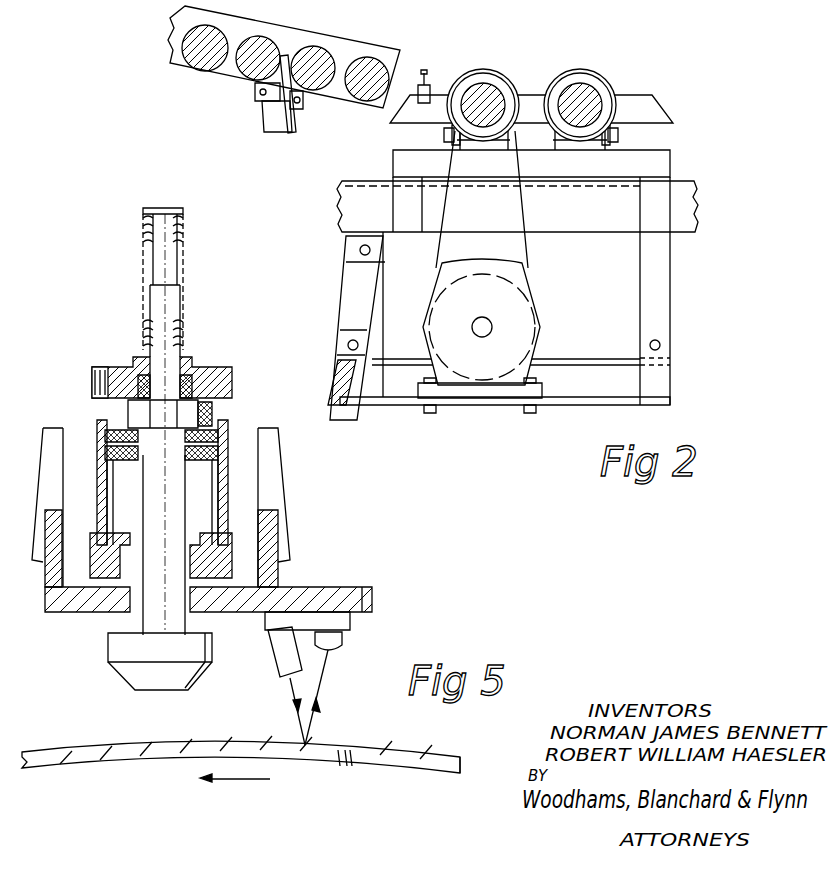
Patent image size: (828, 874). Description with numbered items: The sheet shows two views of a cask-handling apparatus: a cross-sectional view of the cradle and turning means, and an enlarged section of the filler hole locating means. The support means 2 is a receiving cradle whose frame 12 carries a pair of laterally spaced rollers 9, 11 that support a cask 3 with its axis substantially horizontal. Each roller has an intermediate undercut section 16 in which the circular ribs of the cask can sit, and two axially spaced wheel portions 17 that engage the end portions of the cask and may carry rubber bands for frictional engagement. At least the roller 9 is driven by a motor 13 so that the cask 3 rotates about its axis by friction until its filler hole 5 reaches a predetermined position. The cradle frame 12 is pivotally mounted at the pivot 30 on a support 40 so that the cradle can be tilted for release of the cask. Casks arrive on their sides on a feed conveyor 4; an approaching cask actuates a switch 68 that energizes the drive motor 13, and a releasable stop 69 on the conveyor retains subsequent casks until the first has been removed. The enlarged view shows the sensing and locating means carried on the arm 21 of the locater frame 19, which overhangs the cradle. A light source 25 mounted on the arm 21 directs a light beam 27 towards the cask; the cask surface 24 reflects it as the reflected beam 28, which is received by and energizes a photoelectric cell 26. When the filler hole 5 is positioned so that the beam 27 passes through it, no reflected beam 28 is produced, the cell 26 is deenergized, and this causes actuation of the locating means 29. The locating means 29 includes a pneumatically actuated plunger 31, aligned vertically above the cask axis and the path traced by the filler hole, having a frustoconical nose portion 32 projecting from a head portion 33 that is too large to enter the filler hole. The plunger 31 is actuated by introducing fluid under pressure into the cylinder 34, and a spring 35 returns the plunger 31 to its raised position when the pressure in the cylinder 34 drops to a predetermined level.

In FIG. 2, the support means 2 is at (642, 78).
In FIG. 5, the cask 3 is at (446, 762).
In FIG. 2, the feed conveyor 4 is at (195, 72).
In FIG. 5, the filler hole 5 is at (355, 760).
In FIG. 2, the roller 9 is at (489, 93).
In FIG. 2, the roller 11 is at (586, 93).
In FIG. 2, the frame 12 is at (655, 118).
In FIG. 2, the motor 13 is at (505, 329).
In FIG. 2, the undercut section 16 is at (491, 132).
In FIG. 2, the wheel portions 17 is at (463, 72).
In FIG. 5, the locater frame 19 is at (288, 550).
In FIG. 5, the arm 21 is at (272, 466).
In FIG. 5, the surface 24 is at (45, 758).
In FIG. 5, the light source 25 is at (285, 668).
In FIG. 5, the photoelectric cell 26 is at (344, 640).
In FIG. 5, the light beam 27 is at (293, 702).
In FIG. 5, the reflected beam 28 is at (324, 672).
In FIG. 5, the locating means 29 is at (84, 452).
In FIG. 2, the pivotal mounting 30 is at (442, 136).
In FIG. 5, the plunger 31 is at (143, 618).
In FIG. 5, the nose portion 32 is at (142, 672).
In FIG. 5, the head portion 33 is at (125, 656).
In FIG. 5, the cylinder 34 is at (222, 445).
In FIG. 5, the spring 35 is at (185, 226).
In FIG. 2, the support 40 is at (645, 166).
In FIG. 2, the switch 68 is at (424, 70).
In FIG. 2, the releasable stop 69 is at (258, 88).